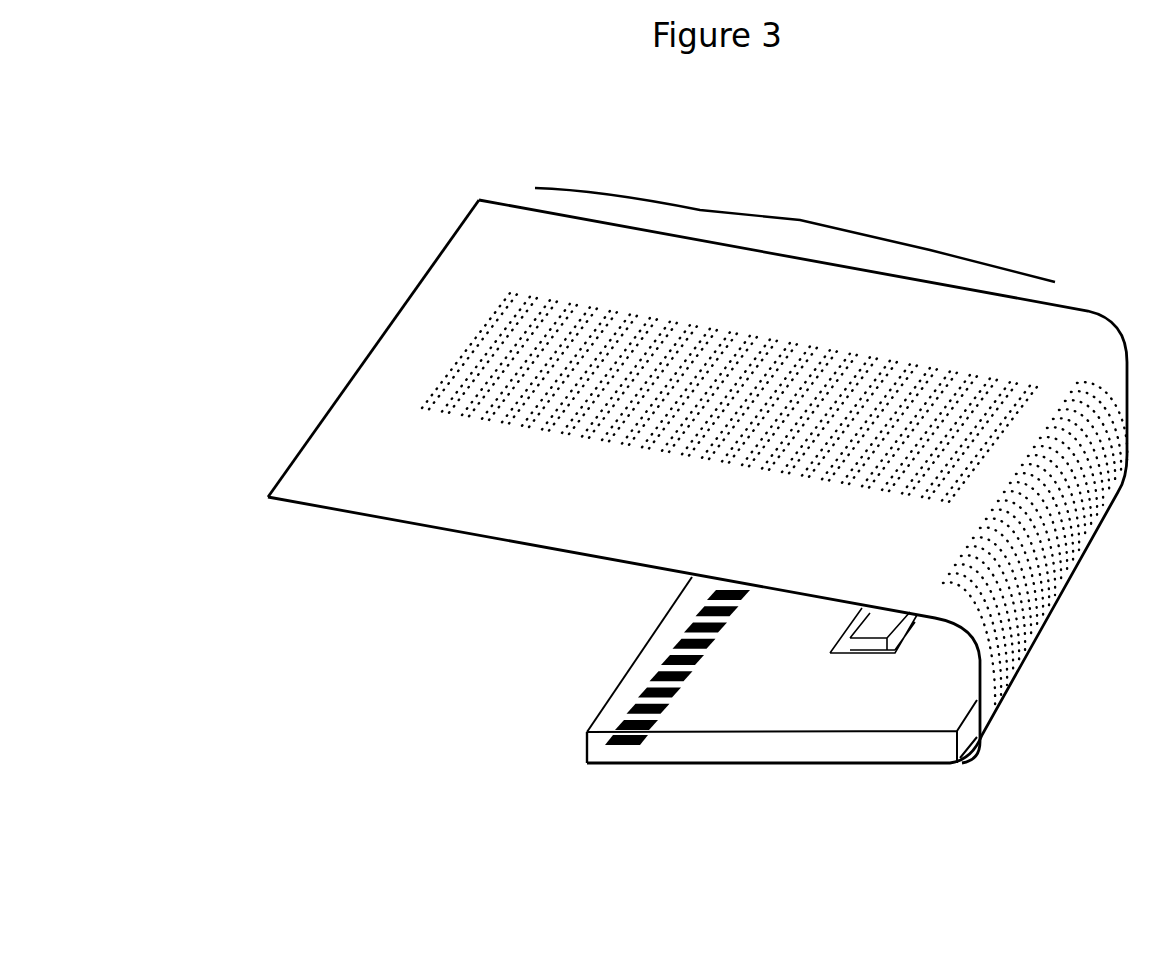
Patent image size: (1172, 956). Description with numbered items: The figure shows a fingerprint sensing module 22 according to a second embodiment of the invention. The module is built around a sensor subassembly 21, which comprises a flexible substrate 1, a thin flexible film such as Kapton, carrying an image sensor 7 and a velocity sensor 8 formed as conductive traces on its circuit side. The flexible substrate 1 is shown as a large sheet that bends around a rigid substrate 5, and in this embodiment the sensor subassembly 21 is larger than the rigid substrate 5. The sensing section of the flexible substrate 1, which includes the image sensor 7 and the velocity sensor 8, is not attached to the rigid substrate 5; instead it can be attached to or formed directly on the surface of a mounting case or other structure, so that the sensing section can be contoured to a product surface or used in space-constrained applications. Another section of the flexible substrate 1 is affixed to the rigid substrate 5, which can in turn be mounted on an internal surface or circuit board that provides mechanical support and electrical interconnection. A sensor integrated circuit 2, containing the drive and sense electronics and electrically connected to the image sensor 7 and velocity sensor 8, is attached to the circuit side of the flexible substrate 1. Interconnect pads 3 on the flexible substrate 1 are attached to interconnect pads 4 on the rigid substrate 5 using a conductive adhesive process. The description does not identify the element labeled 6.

The flexible substrate 1 is at (478, 198).
The sensor integrated circuit 2 is at (882, 637).
The interconnect pads 3 is at (640, 750).
The interconnect pads 4 is at (635, 745).
The rigid substrate 5 is at (584, 751).
The substrate 6 is at (831, 653).
The image sensor 7 is at (1080, 372).
The velocity sensor 8 is at (545, 440).
The sensor subassembly 21 is at (795, 229).
The fingerprint sensing module 22 is at (340, 348).